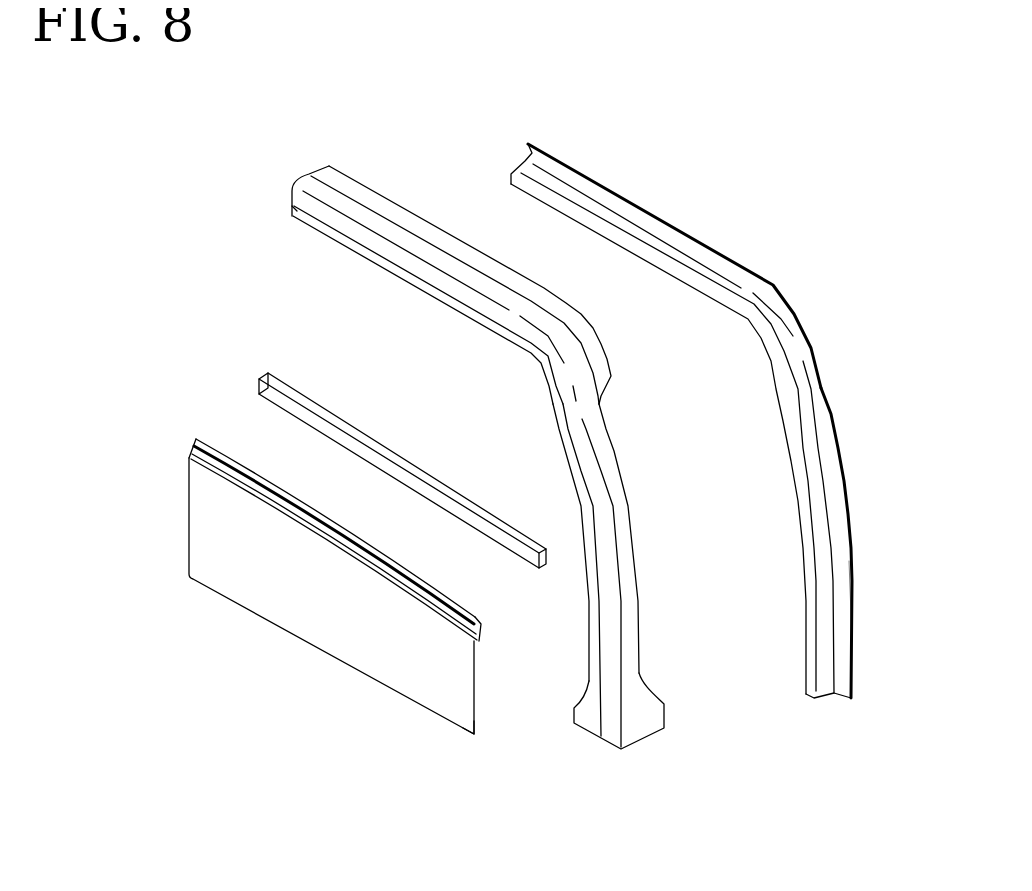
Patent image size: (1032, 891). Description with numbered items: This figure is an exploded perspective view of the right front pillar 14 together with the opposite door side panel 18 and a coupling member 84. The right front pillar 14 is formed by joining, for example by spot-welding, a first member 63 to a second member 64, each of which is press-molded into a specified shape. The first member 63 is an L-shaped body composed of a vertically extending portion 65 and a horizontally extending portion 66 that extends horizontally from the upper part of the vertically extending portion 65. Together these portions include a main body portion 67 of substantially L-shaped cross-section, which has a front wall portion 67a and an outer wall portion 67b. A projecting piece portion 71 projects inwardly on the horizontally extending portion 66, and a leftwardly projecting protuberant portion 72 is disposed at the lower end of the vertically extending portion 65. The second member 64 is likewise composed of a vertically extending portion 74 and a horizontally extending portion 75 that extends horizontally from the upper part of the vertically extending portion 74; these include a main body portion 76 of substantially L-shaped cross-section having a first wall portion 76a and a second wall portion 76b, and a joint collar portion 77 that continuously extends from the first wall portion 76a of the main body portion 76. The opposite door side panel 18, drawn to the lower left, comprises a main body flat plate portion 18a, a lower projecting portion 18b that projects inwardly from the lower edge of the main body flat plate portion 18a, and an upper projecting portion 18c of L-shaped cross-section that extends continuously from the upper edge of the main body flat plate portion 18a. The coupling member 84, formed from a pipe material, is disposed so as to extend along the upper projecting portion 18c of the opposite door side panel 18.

The right front pillar 14 is at (721, 383).
The opposite door side panel 18 is at (378, 626).
The main body flat plate portion 18a is at (252, 650).
The lower projecting portion 18b is at (483, 783).
The upper projecting portion 18c is at (519, 603).
The first member 63 is at (451, 246).
The second member 64 is at (721, 383).
The vertically extending portion 65 is at (608, 593).
The horizontally extending portion 66 is at (442, 253).
The main body portion 67 is at (677, 607).
The front wall portion 67a is at (653, 445).
The outer wall portion 67b is at (592, 490).
The projecting piece portion 71 is at (557, 262).
The protuberant portion 72 is at (657, 767).
The vertically extending portion 74 is at (898, 588).
The horizontally extending portion 75 is at (672, 158).
The main body portion 76 is at (880, 398).
The first wall portion 76a is at (755, 234).
The second wall portion 76b is at (807, 380).
The joint collar portion 77 is at (805, 553).
The coupling member 84 is at (337, 420).